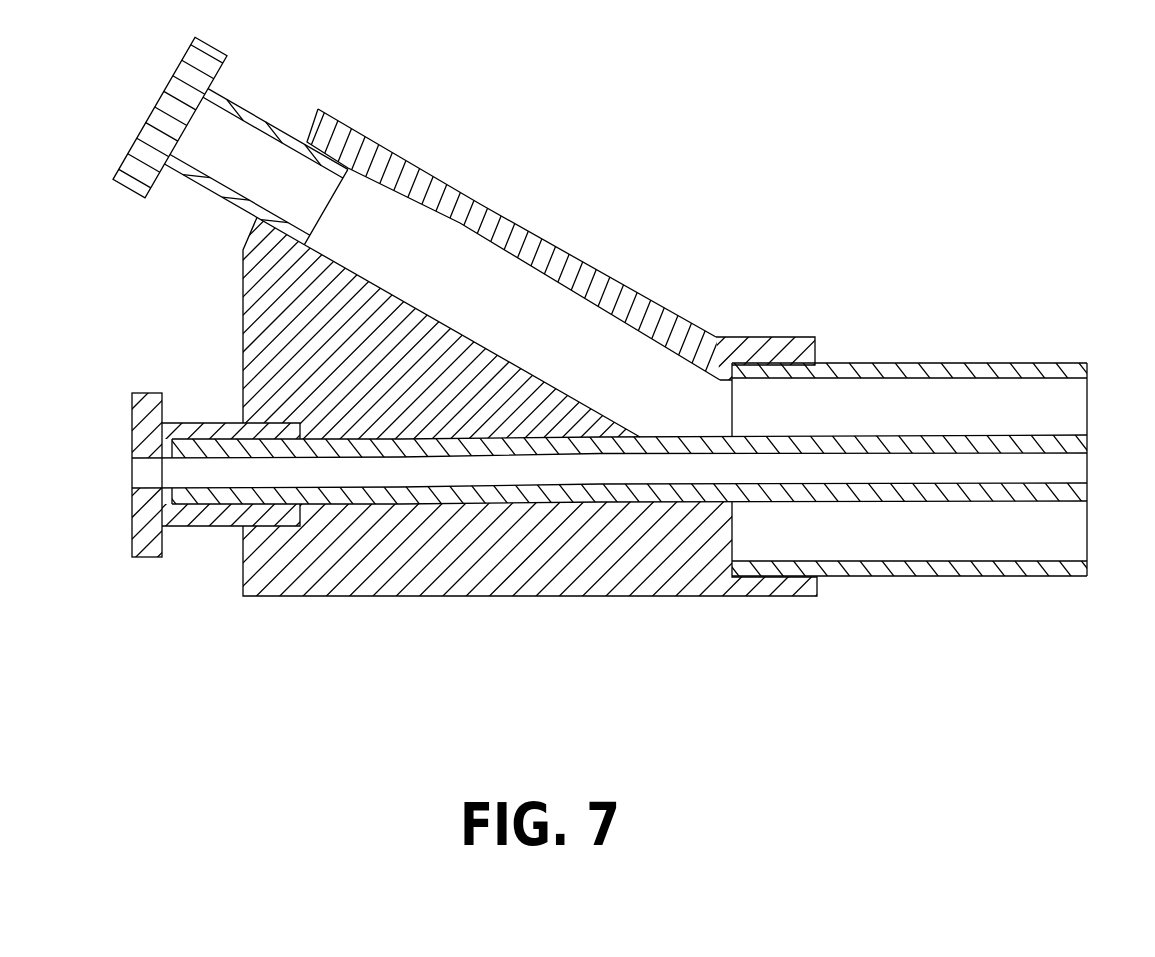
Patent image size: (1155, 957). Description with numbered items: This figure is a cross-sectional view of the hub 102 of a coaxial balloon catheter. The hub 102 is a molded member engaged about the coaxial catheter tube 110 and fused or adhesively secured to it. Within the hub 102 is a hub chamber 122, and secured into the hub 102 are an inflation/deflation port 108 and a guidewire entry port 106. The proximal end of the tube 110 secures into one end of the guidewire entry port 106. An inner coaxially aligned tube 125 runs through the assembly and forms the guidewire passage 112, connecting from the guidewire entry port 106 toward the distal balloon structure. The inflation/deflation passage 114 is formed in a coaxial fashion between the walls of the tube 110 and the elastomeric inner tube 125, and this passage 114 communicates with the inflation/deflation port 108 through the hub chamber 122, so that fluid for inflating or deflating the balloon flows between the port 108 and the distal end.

The hub 102 is at (258, 293).
The guidewire entry port 106 is at (132, 517).
The inflation/deflation port 108 is at (228, 102).
The coaxial catheter tube 110 is at (870, 363).
The guidewire passage 112 is at (980, 468).
The inflation/deflation passage 114 is at (1035, 405).
The hub chamber 122 is at (480, 268).
The inner coaxially aligned tube 125 is at (948, 447).